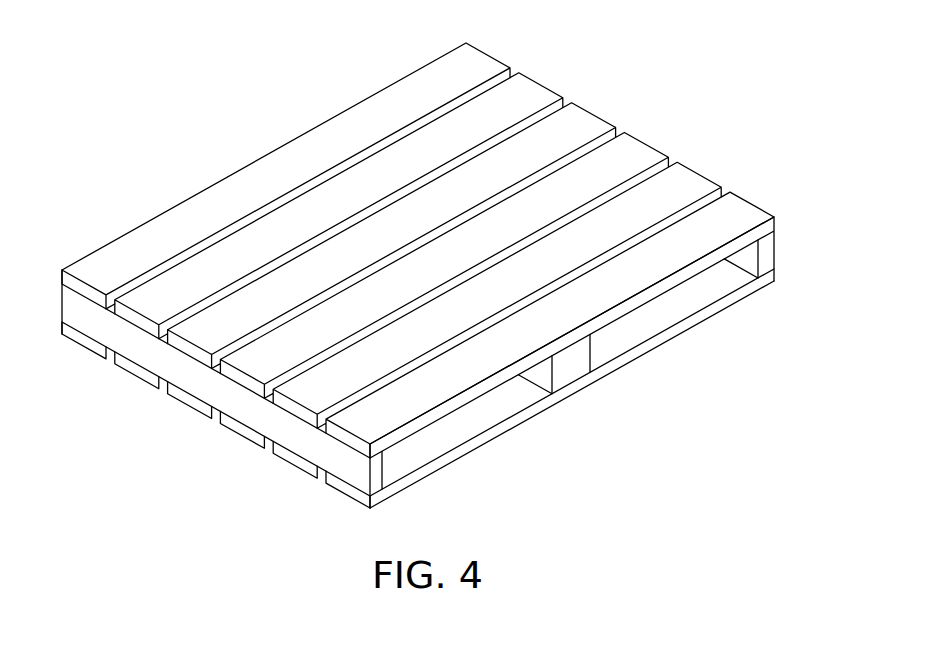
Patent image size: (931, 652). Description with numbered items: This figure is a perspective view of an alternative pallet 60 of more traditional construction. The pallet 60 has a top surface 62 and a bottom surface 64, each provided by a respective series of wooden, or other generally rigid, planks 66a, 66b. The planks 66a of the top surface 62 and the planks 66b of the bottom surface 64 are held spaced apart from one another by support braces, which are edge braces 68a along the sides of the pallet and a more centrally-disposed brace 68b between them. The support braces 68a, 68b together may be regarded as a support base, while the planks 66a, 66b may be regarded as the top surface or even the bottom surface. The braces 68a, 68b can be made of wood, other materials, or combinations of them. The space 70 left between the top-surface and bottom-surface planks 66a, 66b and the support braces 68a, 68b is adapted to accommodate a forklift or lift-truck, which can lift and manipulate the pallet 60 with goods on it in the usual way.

The alternative pallet 60 is at (436, 276).
The top surface 62 is at (125, 258).
The bottom surface 64 is at (396, 402).
The planks 66a is at (521, 60).
The planks 66b is at (126, 366).
The edge braces 68a is at (767, 259).
The centrally-disposed braces 68b is at (569, 373).
The space 70 is at (680, 307).